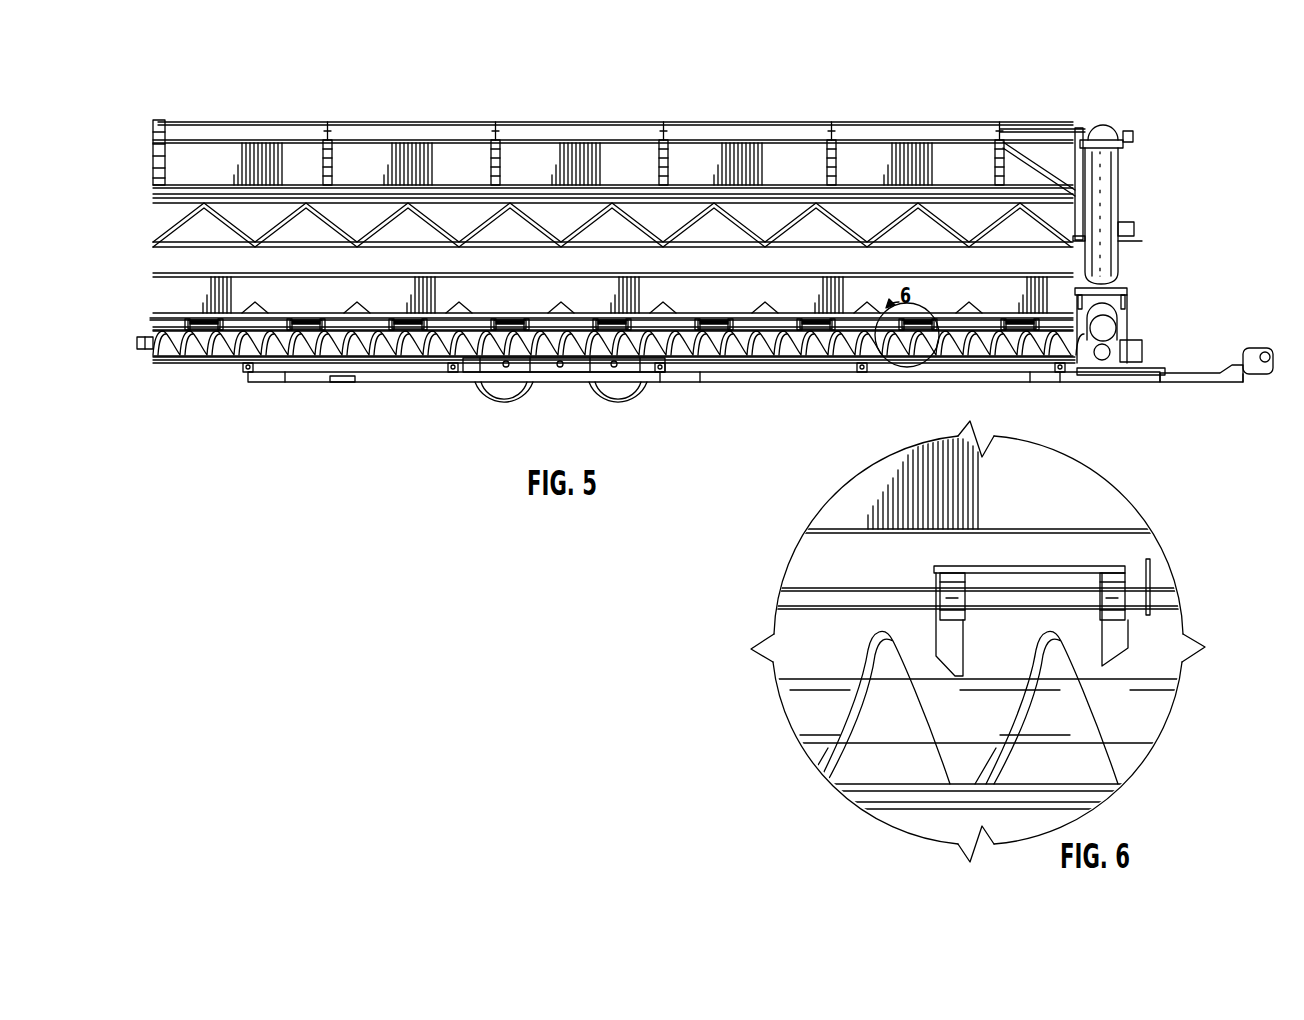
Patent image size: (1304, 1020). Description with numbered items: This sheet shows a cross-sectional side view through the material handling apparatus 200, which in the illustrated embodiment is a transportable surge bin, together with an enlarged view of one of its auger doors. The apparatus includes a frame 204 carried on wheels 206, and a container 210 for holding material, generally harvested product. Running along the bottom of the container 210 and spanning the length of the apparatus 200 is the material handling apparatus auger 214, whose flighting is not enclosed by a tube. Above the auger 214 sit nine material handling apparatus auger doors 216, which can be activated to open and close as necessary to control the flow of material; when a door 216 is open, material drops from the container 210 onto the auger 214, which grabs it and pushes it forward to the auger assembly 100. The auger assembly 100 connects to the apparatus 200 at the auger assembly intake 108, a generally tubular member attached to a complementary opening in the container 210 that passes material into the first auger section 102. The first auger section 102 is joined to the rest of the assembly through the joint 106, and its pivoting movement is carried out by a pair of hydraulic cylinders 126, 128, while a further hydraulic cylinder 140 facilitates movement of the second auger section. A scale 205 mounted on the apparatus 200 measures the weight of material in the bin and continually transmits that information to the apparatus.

In FIG. 5, the auger assembly 100 is at (1142, 255).
In FIG. 5, the first auger section 102 is at (1122, 196).
In FIG. 5, the joint 106 is at (1120, 126).
In FIG. 5, the auger assembly intake 108 is at (1093, 380).
In FIG. 5, the hydraulic cylinder 126 is at (1125, 335).
In FIG. 5, the hydraulic cylinder 128 is at (1080, 318).
In FIG. 5, the hydraulic cylinder 140 is at (1030, 148).
In FIG. 5, the material handling apparatus 200 is at (397, 88).
In FIG. 5, the frame 204 is at (332, 378).
In FIG. 5, the scale 205 is at (248, 372).
In FIG. 5, the wheels 206 is at (503, 402).
In FIG. 5, the container 210 is at (540, 122).
In FIG. 5, the material handling apparatus auger 214 is at (204, 346).
In FIG. 6, the material handling apparatus auger 214 is at (1150, 706).
In FIG. 5, the material handling apparatus auger door 216 is at (208, 320).
In FIG. 6, the material handling apparatus auger door 216 is at (948, 570).